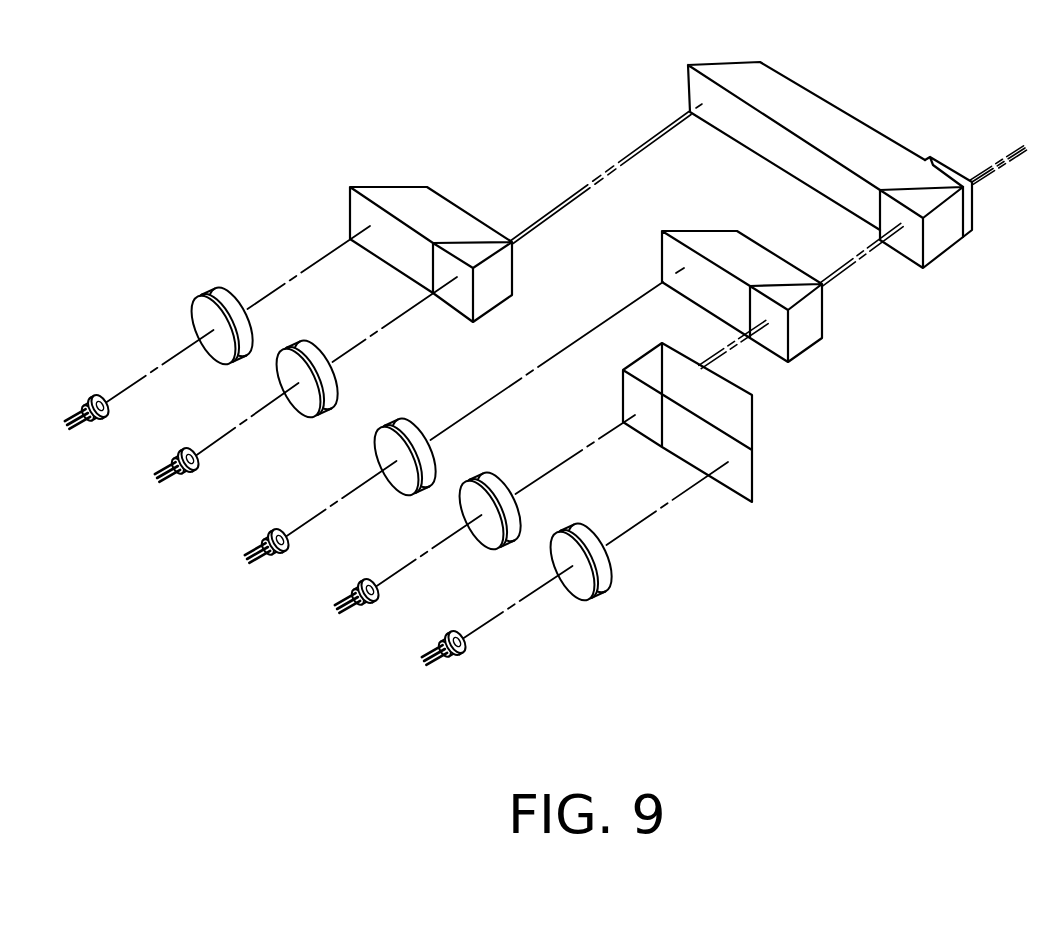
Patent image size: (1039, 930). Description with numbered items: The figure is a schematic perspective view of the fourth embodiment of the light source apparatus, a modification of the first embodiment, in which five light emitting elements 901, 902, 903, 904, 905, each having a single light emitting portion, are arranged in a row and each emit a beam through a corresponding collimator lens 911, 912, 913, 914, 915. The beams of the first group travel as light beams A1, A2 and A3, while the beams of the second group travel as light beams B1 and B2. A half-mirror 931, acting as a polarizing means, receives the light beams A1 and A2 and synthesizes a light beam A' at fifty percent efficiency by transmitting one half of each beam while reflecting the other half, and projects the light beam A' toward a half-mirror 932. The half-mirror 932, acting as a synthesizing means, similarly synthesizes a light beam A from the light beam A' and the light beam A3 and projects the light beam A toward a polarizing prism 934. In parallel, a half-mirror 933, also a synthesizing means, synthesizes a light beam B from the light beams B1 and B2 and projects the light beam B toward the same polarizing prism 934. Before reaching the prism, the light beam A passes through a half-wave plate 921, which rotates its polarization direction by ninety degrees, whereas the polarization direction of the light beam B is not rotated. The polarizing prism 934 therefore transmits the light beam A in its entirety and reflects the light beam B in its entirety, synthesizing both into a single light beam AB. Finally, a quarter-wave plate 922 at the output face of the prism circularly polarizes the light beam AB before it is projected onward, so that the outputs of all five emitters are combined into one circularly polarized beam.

The light emitting element 901 is at (455, 668).
The light emitting element 902 is at (363, 623).
The light emitting element 903 is at (278, 567).
The light emitting element 904 is at (180, 490).
The light emitting element 905 is at (95, 433).
The collimator lens 911 is at (573, 588).
The collimator lens 912 is at (483, 545).
The collimator lens 913 is at (400, 482).
The collimator lens 914 is at (298, 405).
The collimator lens 915 is at (217, 350).
The half-wave plate 921 is at (902, 257).
The quarter-wave plate 922 is at (973, 223).
The half-mirror 931 is at (740, 420).
The half-mirror 932 is at (823, 325).
The half-mirror 933 is at (410, 193).
The polarizing prism 934 is at (840, 127).
The light beam A1 is at (595, 559).
The light beam A2 is at (505, 510).
The light beam A3 is at (485, 408).
The light beam A' is at (732, 344).
The light beam A is at (862, 254).
The light beam B1 is at (326, 375).
The light beam B2 is at (238, 322).
The light beam B is at (606, 174).
The light beam AB is at (997, 157).